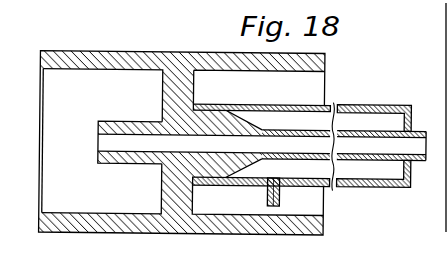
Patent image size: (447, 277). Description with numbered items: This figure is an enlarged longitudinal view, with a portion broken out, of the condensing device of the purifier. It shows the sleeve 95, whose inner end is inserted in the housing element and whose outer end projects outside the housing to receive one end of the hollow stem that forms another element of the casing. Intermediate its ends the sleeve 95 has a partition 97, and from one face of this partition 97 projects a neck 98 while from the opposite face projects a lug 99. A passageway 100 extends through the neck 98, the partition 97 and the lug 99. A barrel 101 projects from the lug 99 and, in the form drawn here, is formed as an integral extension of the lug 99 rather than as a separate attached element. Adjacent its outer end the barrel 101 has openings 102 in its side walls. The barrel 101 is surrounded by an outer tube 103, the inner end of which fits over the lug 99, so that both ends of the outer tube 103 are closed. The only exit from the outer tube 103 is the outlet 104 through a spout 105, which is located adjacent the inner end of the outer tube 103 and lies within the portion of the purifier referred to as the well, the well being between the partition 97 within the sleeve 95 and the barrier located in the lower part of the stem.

The sleeve 95 is at (124, 52).
The partition 97 is at (170, 196).
The neck 98 is at (133, 122).
The lug 99 is at (232, 127).
The passageway 100 is at (108, 143).
The barrel 101 is at (385, 131).
The openings 102 is at (350, 131).
The outer tube 103 is at (373, 186).
The outlet 104 is at (268, 197).
The spout 105 is at (280, 206).